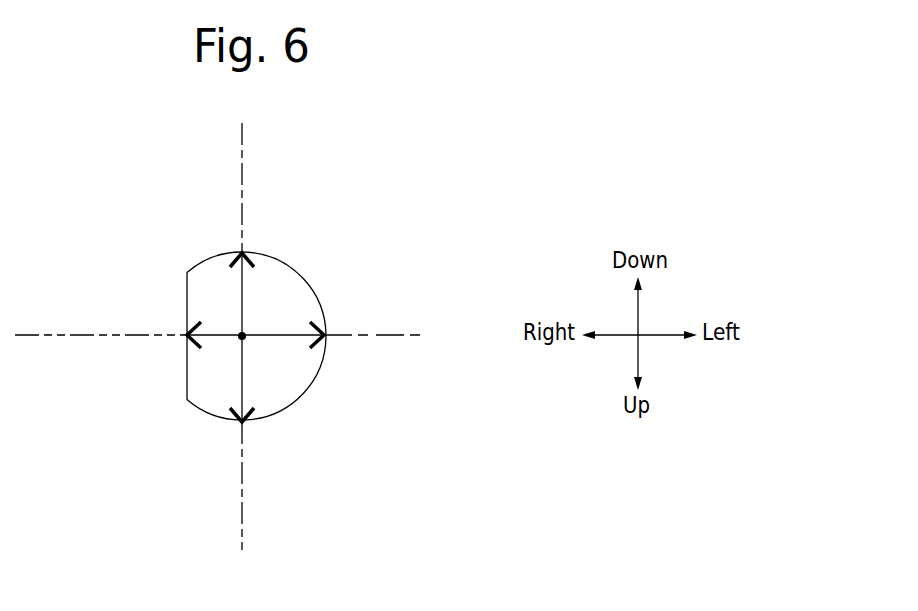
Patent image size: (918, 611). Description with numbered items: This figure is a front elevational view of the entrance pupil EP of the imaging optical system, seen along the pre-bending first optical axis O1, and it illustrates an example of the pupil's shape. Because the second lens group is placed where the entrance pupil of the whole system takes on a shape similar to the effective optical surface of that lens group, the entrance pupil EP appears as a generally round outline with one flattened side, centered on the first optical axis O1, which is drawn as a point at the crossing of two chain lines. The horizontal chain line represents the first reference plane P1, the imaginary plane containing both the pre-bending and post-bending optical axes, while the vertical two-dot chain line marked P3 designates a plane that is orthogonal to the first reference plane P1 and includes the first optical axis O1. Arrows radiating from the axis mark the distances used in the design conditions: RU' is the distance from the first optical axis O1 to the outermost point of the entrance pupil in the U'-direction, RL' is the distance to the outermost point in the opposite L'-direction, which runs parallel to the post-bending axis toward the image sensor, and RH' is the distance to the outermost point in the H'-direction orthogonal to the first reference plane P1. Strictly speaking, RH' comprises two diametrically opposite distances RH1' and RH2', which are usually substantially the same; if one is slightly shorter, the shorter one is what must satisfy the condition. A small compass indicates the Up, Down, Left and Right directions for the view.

The first optical axis O1 is at (242, 336).
The entrance pupil EP is at (202, 282).
The distance in the H'-direction RH' is at (332, 334).
The first H'-direction distance RH1' is at (332, 334).
The second H'-direction distance RH2' is at (306, 419).
The distance in the L'-direction RL' is at (178, 375).
The distance in the U'-direction RU' is at (297, 374).
The first reference plane P1 is at (395, 333).
The plane orthogonal to the first reference plane P3 is at (242, 518).